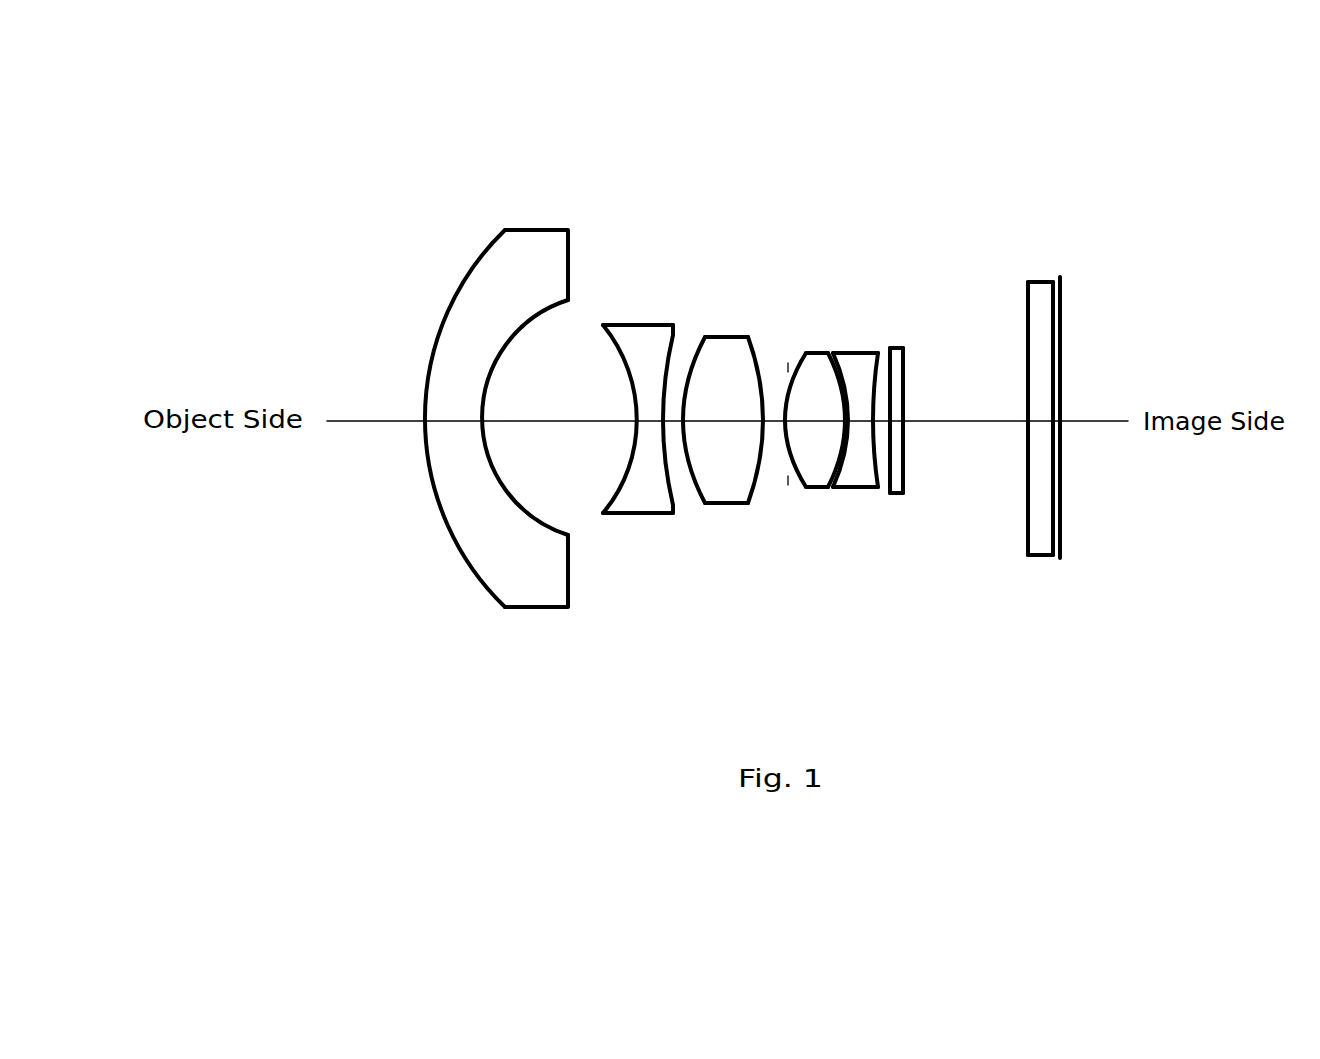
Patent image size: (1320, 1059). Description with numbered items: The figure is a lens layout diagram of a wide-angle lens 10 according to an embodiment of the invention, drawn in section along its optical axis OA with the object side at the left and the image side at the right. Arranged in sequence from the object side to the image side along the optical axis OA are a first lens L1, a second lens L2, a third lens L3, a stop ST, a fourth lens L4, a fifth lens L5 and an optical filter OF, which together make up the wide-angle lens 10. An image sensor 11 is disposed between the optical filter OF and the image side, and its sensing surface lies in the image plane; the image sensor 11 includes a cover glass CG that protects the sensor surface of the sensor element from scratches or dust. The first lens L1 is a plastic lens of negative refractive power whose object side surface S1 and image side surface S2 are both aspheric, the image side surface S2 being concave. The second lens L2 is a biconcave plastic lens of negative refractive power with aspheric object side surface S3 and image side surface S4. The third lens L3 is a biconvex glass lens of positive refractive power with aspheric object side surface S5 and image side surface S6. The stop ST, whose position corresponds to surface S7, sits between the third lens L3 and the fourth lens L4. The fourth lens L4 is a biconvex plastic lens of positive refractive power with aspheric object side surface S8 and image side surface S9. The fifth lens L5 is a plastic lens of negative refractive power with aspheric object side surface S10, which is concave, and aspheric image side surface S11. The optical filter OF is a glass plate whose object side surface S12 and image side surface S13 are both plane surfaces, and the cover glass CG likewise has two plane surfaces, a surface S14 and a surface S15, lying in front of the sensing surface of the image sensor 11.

The wide-angle lens 10 is at (892, 103).
The image sensor 11 is at (1022, 105).
The optical axis OA is at (357, 421).
The first lens L1 is at (537, 230).
The second lens L2 is at (642, 325).
The third lens L3 is at (723, 337).
The stop ST is at (788, 363).
The fourth lens L4 is at (817, 353).
The fifth lens L5 is at (858, 353).
The optical filter OF is at (897, 348).
The cover glass CG is at (1041, 282).
The object side surface of first lens S1 is at (447, 527).
The image side surface of first lens S2 is at (535, 523).
The object side surface of second lens S3 is at (628, 470).
The image side surface of second lens S4 is at (667, 473).
The object side surface of third lens S5 is at (690, 480).
The image side surface of third lens S6 is at (758, 470).
The stop surface S7 is at (795, 488).
The object side surface of fourth lens S8 is at (797, 490).
The image side surface of fourth lens S9 is at (838, 440).
The object side surface of fifth lens S10 is at (848, 490).
The image side surface of fifth lens S11 is at (878, 490).
The object side surface of optical filter S12 is at (890, 466).
The image side surface of optical filter S13 is at (903, 468).
The surface of cover glass S14 is at (1028, 510).
The surface of cover glass S15 is at (1053, 535).